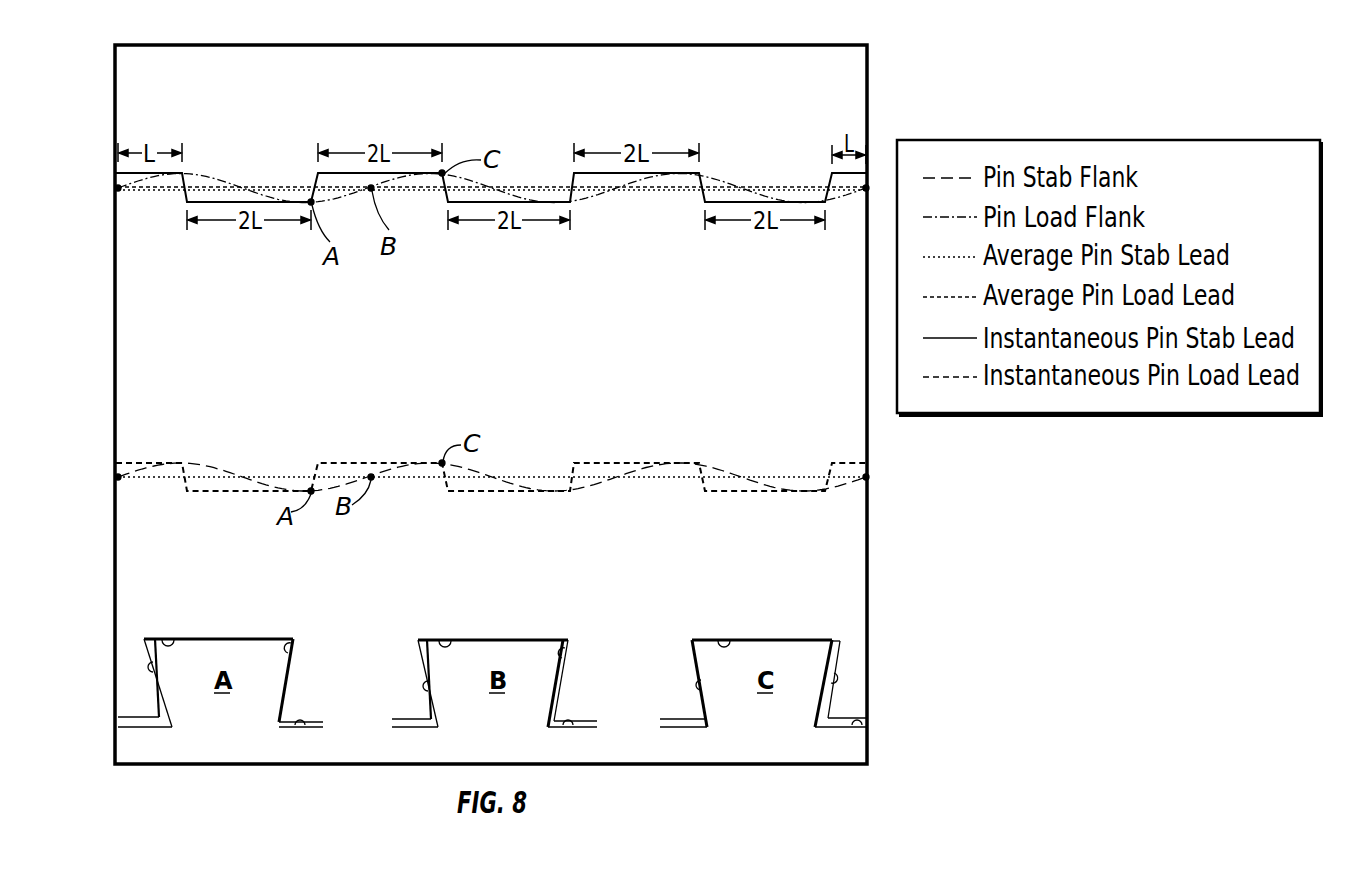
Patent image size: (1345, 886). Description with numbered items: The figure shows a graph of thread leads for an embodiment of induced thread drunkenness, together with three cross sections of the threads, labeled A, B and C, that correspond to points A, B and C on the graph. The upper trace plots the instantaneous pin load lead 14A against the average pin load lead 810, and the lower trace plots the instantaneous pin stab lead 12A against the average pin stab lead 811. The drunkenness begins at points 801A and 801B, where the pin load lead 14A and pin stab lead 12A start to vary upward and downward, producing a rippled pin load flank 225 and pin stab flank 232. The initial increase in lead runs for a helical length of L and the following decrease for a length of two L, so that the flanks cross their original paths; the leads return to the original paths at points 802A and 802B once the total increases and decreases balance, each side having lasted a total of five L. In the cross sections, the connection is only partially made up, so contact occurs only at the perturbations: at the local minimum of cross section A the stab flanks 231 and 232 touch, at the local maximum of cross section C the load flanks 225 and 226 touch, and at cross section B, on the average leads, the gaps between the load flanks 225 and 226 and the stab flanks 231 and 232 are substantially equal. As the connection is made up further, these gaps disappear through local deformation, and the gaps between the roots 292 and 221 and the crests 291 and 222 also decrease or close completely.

The average pin load lead 810 is at (292, 187).
The average pin stab lead 811 is at (283, 476).
The pin load lead 14A is at (617, 172).
The pin stab lead 12A is at (587, 463).
The pin load flank 225 is at (708, 178).
The pin stab flank 232 is at (708, 466).
The starting point of induced drunkenness for pin load lead 801A is at (119, 192).
The return point of pin load flank 802A is at (865, 192).
The starting point of induced drunkenness for pin stab lead 801B is at (119, 480).
The return point of pin stab flank 802B is at (865, 480).
The root 221 is at (166, 636).
The crest 222 is at (188, 639).
The stab flank 231 is at (291, 650).
The load flank 226 is at (148, 672).
The crest 291 is at (288, 728).
The root 292 is at (303, 726).